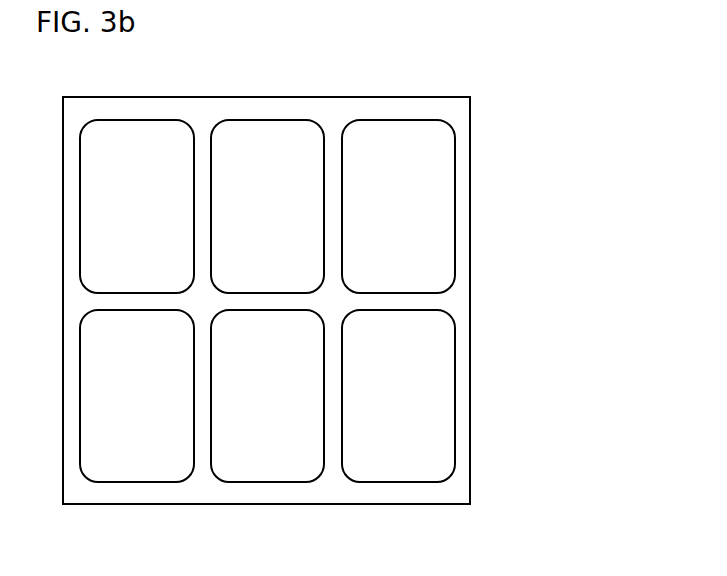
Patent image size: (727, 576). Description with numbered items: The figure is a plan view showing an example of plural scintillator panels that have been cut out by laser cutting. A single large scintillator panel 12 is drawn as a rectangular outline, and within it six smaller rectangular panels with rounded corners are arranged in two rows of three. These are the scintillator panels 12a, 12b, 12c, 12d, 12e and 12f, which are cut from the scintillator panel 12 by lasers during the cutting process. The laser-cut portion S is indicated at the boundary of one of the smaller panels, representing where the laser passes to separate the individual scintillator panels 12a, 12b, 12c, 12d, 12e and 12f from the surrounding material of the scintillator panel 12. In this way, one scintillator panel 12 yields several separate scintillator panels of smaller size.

The scintillator panel 12 is at (503, 206).
The laser-cut portion S is at (105, 120).
The scintillator panel 12a is at (150, 135).
The scintillator panel 12b is at (278, 135).
The scintillator panel 12c is at (411, 135).
The scintillator panel 12d is at (150, 463).
The scintillator panel 12e is at (282, 463).
The scintillator panel 12f is at (410, 463).